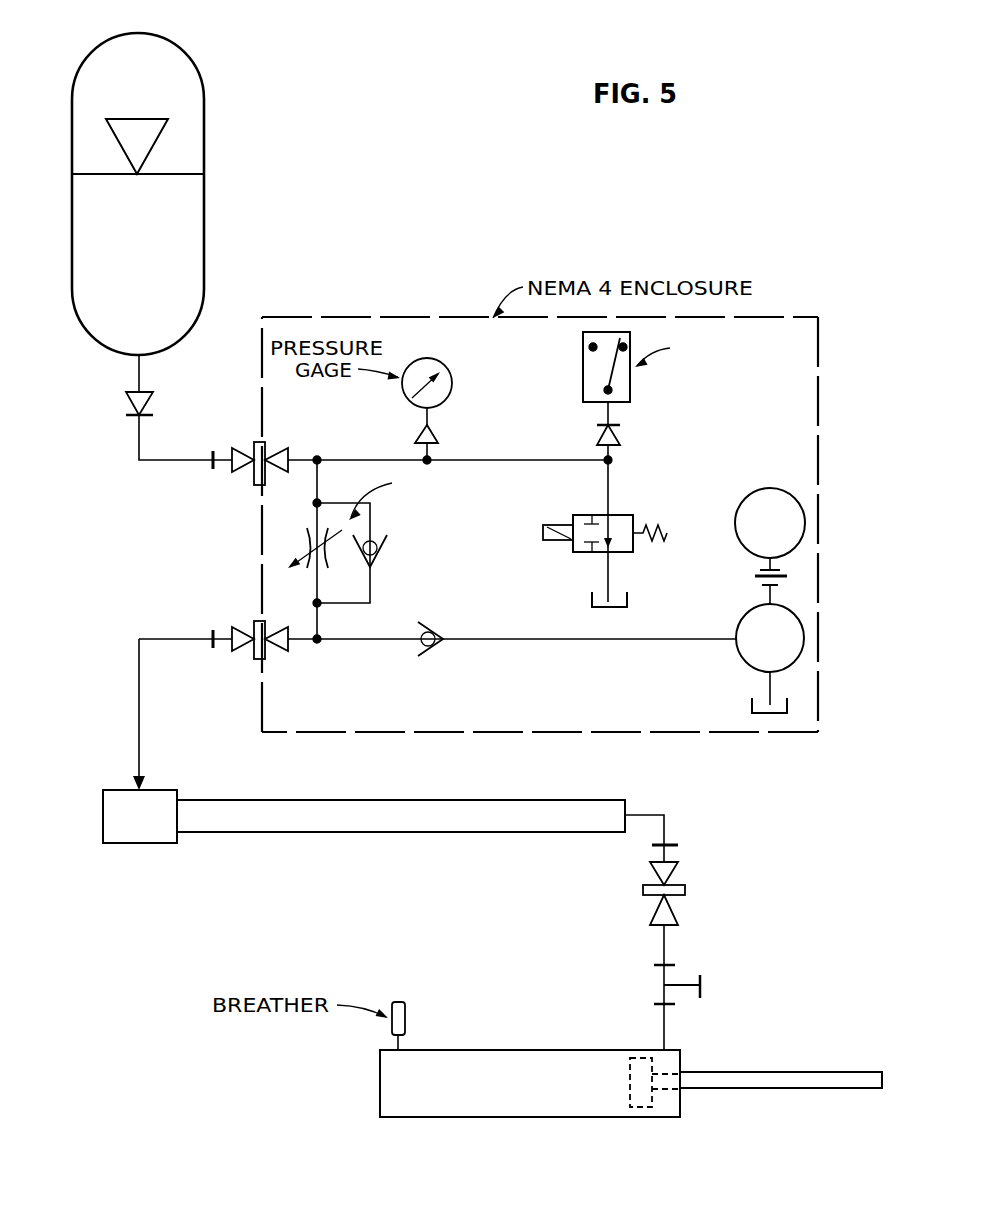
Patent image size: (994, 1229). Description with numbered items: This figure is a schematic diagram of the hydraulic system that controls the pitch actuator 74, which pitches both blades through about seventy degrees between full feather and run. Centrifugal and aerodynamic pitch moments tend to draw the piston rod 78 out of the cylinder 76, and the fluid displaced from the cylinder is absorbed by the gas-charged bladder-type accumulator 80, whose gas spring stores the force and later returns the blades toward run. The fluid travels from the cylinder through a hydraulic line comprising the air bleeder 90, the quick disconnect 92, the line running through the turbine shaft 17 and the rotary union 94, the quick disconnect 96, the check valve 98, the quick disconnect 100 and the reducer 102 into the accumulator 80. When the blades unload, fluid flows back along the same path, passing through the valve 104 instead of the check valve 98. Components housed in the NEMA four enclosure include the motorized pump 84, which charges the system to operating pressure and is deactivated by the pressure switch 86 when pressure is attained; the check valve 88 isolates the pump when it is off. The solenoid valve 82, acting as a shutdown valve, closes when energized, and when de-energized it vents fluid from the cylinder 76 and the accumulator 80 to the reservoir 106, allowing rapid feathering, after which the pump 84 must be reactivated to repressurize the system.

The turbine shaft 17 is at (522, 800).
The pitch actuator 74 is at (631, 1088).
The cylinder 76 is at (517, 1050).
The piston rod 78 is at (768, 1078).
The accumulator 80 is at (182, 253).
The solenoid valve 82 is at (630, 502).
The motorized pump 84 is at (740, 547).
The pressure switch 86 is at (583, 370).
The check valve 88 is at (433, 652).
The air bleeder 90 is at (687, 968).
The quick disconnect 92 is at (655, 875).
The rotary union 94 is at (151, 849).
The quick disconnect 96 is at (247, 652).
The check valve 98 is at (383, 558).
The quick disconnect 100 is at (252, 472).
The reducer 102 is at (153, 403).
The valve 104 is at (305, 542).
The reservoir 106 is at (600, 598).